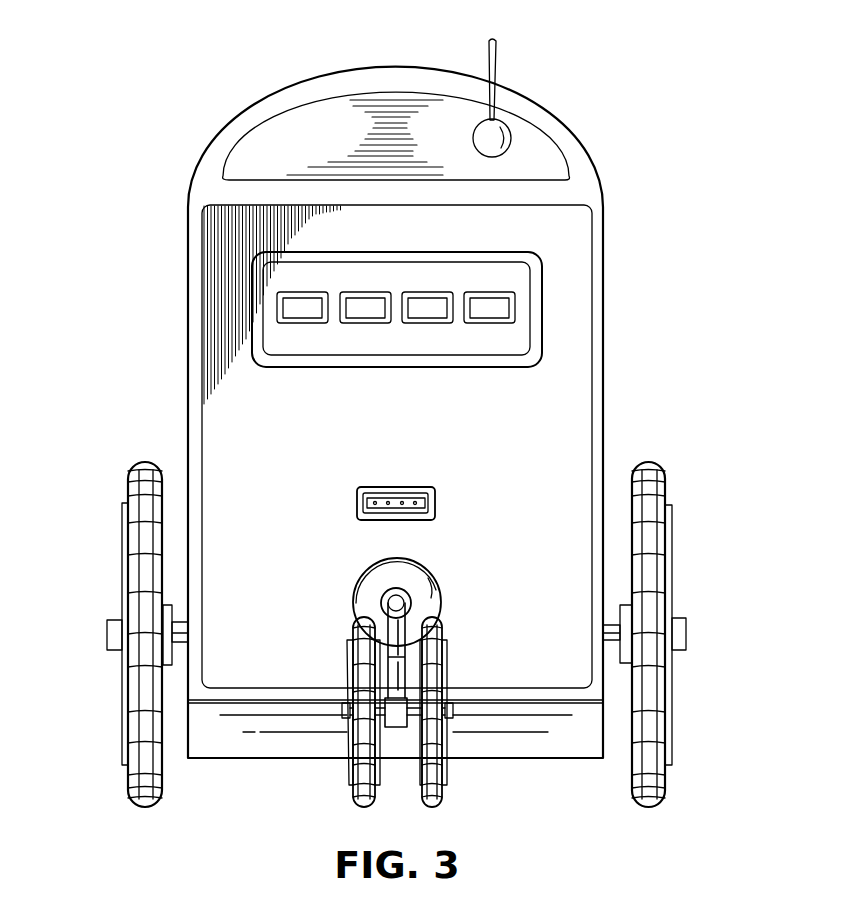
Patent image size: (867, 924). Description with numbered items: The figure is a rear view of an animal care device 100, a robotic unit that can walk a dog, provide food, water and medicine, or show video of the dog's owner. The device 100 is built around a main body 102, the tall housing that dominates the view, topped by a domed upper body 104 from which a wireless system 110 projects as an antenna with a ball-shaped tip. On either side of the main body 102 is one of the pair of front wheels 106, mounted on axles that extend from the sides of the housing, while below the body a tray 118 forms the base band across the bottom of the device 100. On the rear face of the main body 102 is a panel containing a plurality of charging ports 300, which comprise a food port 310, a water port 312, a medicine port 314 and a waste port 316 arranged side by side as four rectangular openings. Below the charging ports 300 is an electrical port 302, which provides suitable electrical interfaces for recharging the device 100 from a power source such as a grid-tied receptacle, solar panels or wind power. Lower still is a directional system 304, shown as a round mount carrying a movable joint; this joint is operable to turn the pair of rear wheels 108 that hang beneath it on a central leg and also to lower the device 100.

The animal care device 100 is at (210, 86).
The main body 102 is at (603, 297).
The upper body 104 is at (557, 132).
The front wheels 106 is at (128, 773).
The rear wheels 108 is at (440, 803).
The wireless system 110 is at (497, 62).
The tray 118 is at (300, 748).
The charging ports 300 is at (398, 250).
The electrical port 302 is at (353, 502).
The directional system 304 is at (353, 592).
The food port 310 is at (303, 323).
The water port 312 is at (367, 323).
The medicine port 314 is at (425, 323).
The waste port 316 is at (487, 323).